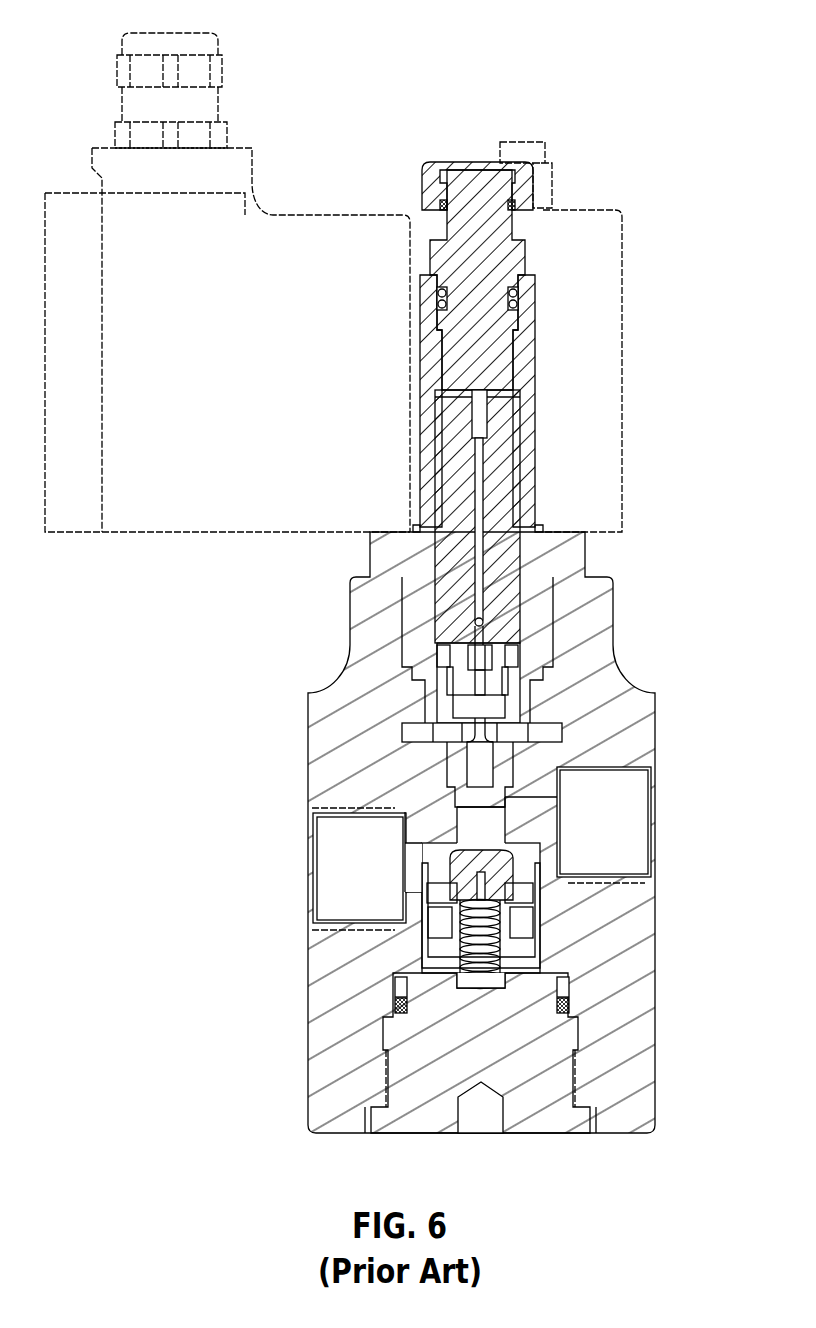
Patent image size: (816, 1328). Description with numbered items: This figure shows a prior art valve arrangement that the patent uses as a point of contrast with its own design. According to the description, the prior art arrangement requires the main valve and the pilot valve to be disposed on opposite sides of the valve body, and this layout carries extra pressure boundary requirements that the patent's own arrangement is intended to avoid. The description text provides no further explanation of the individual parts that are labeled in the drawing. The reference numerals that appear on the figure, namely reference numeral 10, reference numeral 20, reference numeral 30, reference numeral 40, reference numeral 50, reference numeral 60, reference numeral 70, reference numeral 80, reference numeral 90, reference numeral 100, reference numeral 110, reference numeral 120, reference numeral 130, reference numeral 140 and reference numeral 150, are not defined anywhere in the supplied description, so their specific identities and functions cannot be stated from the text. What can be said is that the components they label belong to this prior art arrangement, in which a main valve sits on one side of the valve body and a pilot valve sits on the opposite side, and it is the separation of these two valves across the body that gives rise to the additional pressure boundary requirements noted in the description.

The valve body 10 is at (655, 980).
The pilot valve 20 is at (515, 750).
The flange plate 30 is at (562, 736).
The piston 40 is at (557, 975).
The spring 50 is at (540, 945).
The pin 60 is at (515, 865).
The passage 70 is at (482, 820).
The clip 80 is at (540, 908).
The plug 90 is at (597, 1117).
The cage 100 is at (520, 648).
The pilot pin 110 is at (506, 690).
The base plate 120 is at (508, 712).
The O-ring 130 is at (567, 995).
The armature 140 is at (483, 388).
The cap nut 150 is at (533, 180).